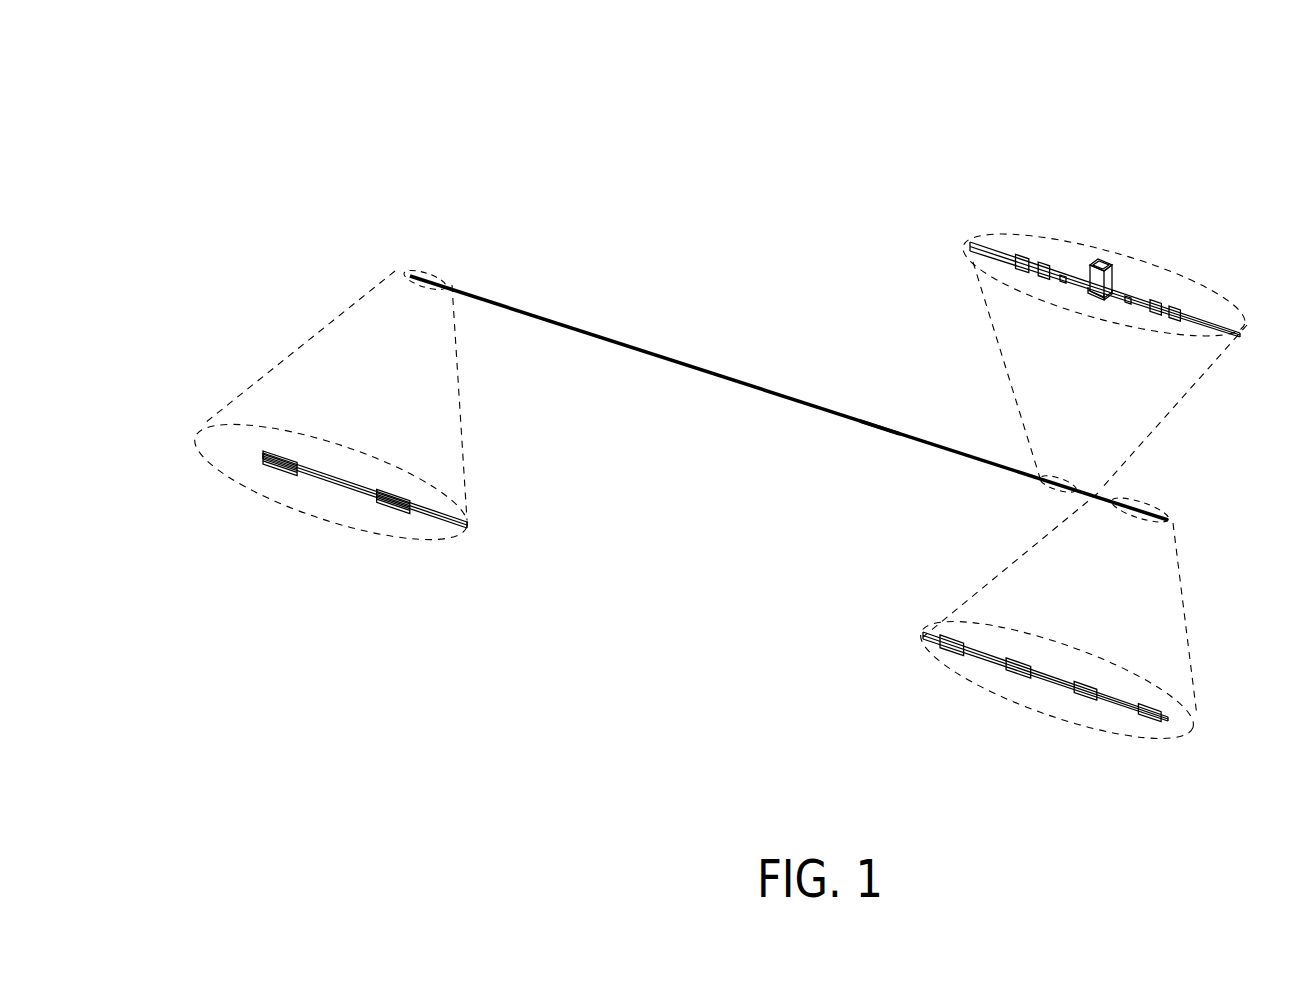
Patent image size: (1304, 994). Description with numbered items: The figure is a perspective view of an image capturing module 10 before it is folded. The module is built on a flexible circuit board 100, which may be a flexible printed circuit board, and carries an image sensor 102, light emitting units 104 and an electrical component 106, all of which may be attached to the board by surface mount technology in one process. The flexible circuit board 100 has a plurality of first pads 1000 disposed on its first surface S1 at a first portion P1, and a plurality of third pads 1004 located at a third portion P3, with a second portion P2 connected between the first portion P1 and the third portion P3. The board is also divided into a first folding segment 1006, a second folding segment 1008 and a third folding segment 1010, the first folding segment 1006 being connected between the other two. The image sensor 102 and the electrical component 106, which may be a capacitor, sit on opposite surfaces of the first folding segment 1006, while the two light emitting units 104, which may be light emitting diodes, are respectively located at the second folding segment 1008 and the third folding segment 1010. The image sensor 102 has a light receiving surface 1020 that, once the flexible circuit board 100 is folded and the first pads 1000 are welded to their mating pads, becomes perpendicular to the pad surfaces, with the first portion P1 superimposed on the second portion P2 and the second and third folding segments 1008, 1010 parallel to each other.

The image capturing module 10 is at (450, 102).
The flexible circuit board 100 is at (697, 368).
The first portion P1 is at (1147, 512).
The second portion P2 is at (882, 430).
The third portion P3 is at (430, 281).
The first surface S1 is at (343, 485).
The first pads 1000 is at (1083, 693).
The third pads 1004 is at (397, 513).
The first folding segment 1006 is at (1087, 291).
The second folding segment 1008 is at (1137, 310).
The third folding segment 1010 is at (1042, 285).
The image sensor 102 is at (1108, 280).
The light receiving surface 1020 is at (1095, 265).
The light emitting unit 104 is at (1066, 276).
The electrical component 106 is at (1095, 295).